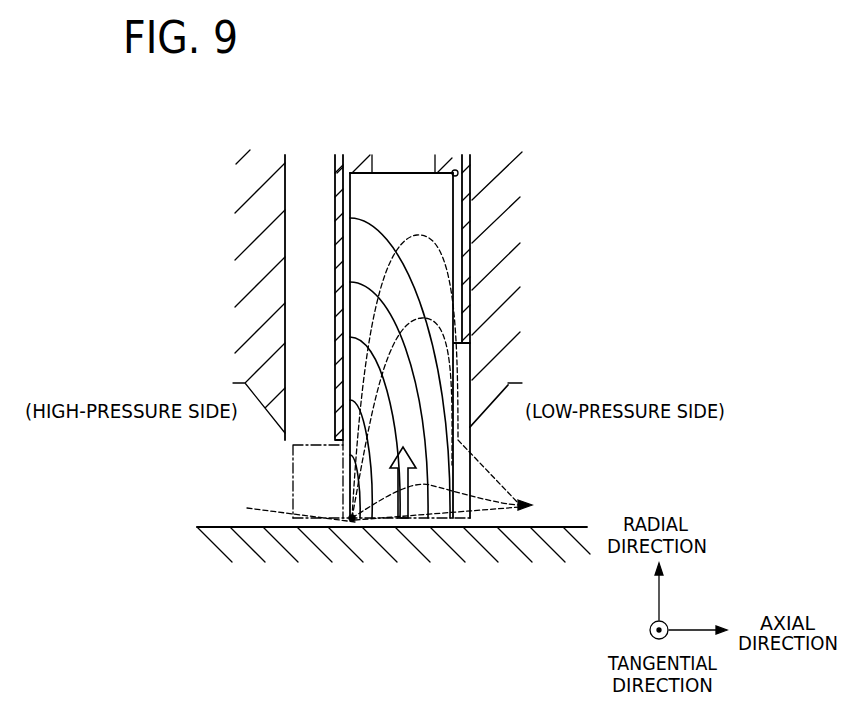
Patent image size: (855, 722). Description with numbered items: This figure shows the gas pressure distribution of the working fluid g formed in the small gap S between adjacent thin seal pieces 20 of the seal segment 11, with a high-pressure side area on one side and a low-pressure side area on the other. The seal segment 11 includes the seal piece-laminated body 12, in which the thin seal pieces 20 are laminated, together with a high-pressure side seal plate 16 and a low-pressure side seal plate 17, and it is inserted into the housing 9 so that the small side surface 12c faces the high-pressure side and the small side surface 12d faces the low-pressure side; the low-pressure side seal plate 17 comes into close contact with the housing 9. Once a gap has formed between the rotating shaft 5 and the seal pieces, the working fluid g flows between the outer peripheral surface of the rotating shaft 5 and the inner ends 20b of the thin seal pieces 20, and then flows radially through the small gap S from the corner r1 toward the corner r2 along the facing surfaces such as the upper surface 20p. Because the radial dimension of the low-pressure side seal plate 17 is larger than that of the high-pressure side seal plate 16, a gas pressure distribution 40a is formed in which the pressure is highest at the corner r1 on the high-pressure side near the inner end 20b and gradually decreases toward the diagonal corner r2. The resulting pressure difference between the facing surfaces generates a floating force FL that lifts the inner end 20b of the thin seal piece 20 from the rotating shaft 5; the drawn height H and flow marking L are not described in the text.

The rotating shaft 5 is at (322, 540).
The housing 9 is at (500, 345).
The seal segment 11 is at (322, 172).
The seal piece-laminated body 12 is at (357, 164).
The small side surface 12c is at (348, 212).
The small side surface 12d is at (458, 205).
The high-pressure side seal plate 16 is at (335, 272).
The low-pressure side seal plate 17 is at (466, 243).
The thin seal piece 20 is at (343, 473).
The upper surface 20p is at (358, 196).
The inner end 20b is at (440, 522).
The gas pressure distribution 40a is at (378, 223).
The small gap S is at (446, 228).
The seal strip height H is at (297, 484).
The working fluid g is at (293, 507).
The corner r1 is at (350, 517).
The corner r2 is at (455, 170).
The leakage flow L is at (472, 473).
The floating force FL is at (402, 528).